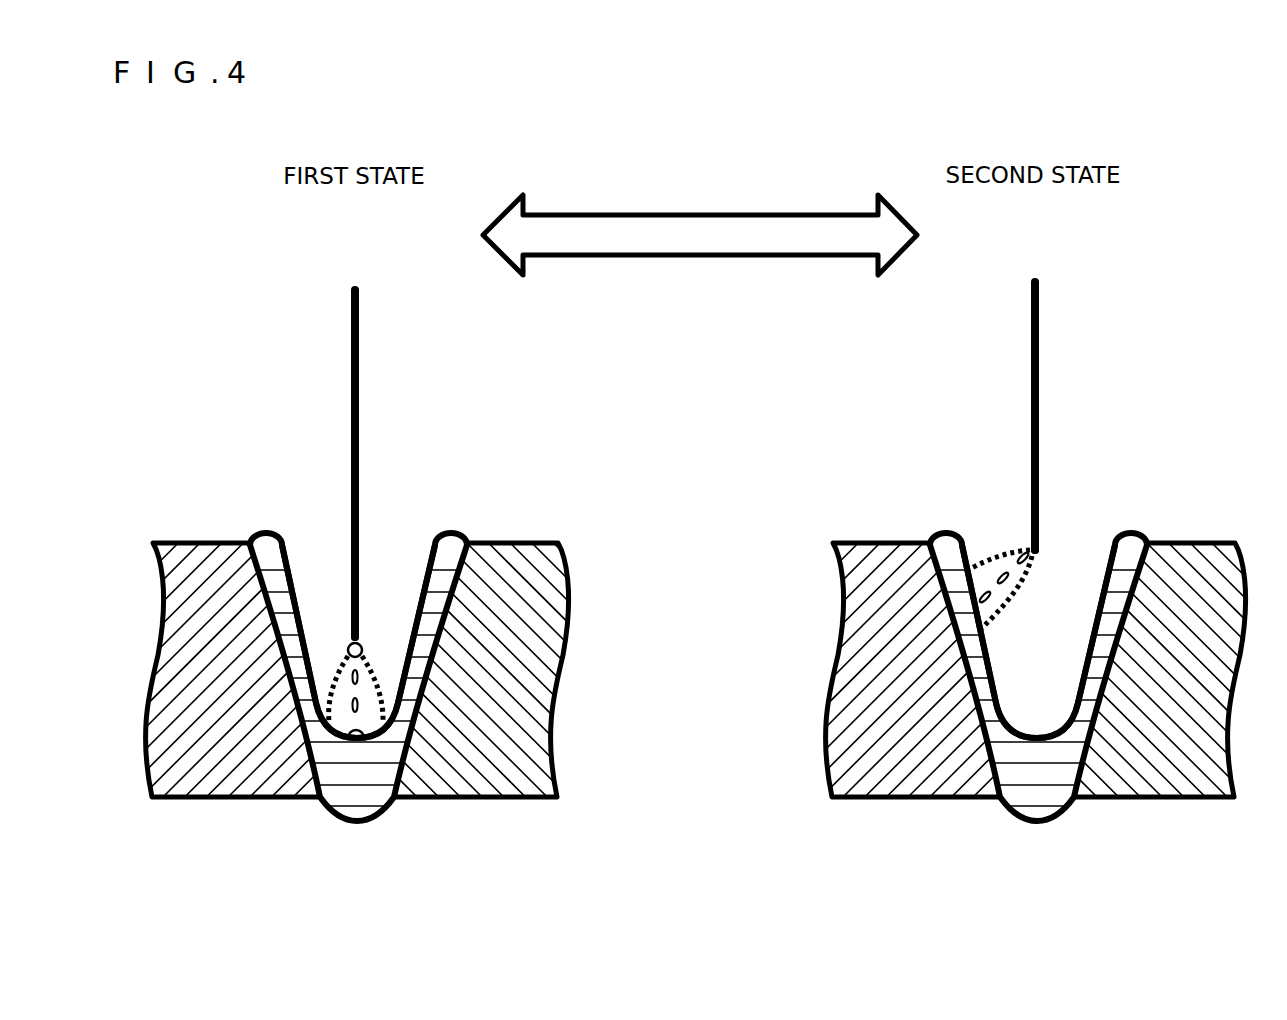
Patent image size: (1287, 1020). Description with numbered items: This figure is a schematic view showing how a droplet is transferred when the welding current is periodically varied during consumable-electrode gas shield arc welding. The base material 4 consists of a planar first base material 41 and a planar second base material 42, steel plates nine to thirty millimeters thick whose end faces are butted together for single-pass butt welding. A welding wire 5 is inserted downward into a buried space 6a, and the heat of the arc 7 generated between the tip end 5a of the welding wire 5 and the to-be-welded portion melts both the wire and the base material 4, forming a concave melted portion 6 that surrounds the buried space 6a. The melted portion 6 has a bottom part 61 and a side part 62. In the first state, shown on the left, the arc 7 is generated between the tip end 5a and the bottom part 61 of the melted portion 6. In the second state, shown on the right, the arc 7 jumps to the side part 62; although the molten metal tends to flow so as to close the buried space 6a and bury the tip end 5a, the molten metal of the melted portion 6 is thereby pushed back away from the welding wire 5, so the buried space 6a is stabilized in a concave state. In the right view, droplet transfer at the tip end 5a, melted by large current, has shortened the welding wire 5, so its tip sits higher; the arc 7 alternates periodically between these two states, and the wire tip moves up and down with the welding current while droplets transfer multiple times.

The base material 4 is at (482, 522).
The first base material 41 is at (210, 778).
The second base material 42 is at (463, 777).
The welding wire 5 is at (359, 372).
The tip end 5a is at (358, 615).
The melted portion 6 is at (273, 533).
The buried space 6a is at (388, 534).
The bottom part 61 is at (360, 740).
The side part 62 is at (420, 597).
The arc 7 is at (331, 655).